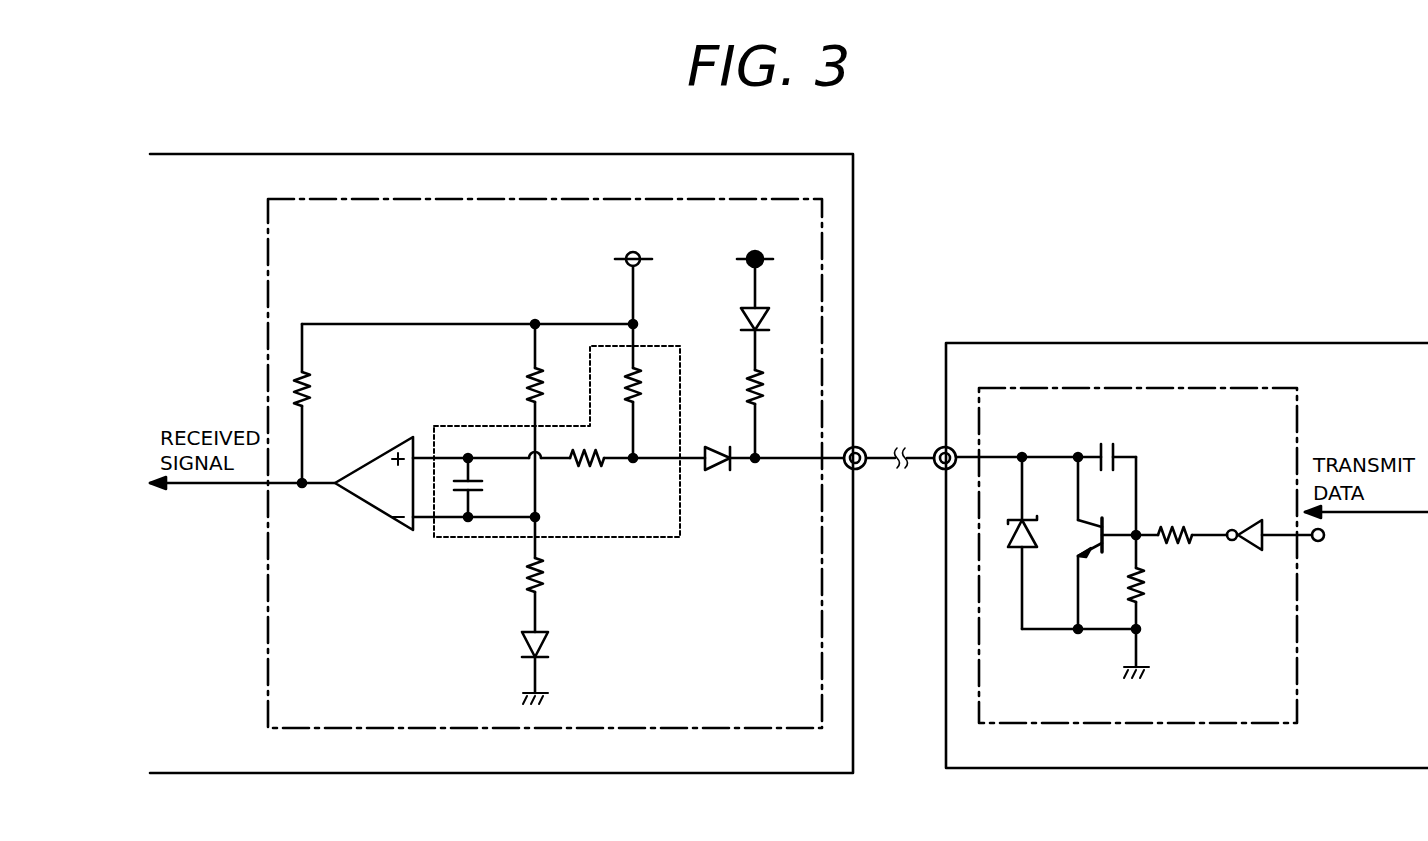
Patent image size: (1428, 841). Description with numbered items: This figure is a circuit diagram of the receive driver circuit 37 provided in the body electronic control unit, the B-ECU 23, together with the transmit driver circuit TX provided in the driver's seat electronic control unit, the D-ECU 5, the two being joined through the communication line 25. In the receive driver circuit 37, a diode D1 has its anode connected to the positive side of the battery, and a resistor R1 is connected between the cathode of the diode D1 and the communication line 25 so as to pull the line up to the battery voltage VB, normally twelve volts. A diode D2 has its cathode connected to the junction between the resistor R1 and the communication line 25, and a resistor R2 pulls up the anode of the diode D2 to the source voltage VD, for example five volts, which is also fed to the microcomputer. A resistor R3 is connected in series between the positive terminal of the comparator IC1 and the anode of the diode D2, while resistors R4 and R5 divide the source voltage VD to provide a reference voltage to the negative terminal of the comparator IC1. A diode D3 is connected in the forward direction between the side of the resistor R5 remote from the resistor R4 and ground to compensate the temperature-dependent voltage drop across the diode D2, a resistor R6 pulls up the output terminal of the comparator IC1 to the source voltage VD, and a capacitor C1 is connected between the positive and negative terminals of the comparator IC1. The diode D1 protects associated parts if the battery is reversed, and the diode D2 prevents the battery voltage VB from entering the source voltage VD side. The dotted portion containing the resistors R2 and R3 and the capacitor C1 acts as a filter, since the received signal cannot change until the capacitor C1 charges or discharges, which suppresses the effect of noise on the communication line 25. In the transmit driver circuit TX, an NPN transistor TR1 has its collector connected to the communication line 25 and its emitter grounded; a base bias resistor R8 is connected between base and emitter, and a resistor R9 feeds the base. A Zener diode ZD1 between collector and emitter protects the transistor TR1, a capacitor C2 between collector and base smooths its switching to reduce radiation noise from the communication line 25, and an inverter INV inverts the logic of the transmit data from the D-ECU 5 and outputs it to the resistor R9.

The body electronic control unit (B-ECU) 23 is at (826, 149).
The receive driver circuit 37 is at (668, 199).
The communication line 25 is at (878, 455).
The driver's seat electronic control unit (D-ECU) 5 is at (1378, 342).
The transmit driver circuit TX is at (1240, 388).
The comparator IC1 is at (372, 462).
The resistor R1 is at (773, 390).
The resistor R2 is at (648, 390).
The resistor R3 is at (583, 470).
The resistor R4 is at (552, 390).
The resistor R5 is at (550, 580).
The resistor R6 is at (318, 387).
The base bias resistor R8 is at (1152, 586).
The resistor R9 is at (1180, 522).
The capacitor C1 is at (486, 486).
The capacitor C2 is at (1107, 439).
The diode D1 is at (765, 318).
The diode D2 is at (714, 446).
The diode D3 is at (550, 648).
The Zener diode ZD1 is at (1047, 500).
The NPN transistor TR1 is at (1110, 522).
The inverter INV is at (1253, 524).
The source voltage VD is at (633, 275).
The battery voltage VB is at (755, 267).